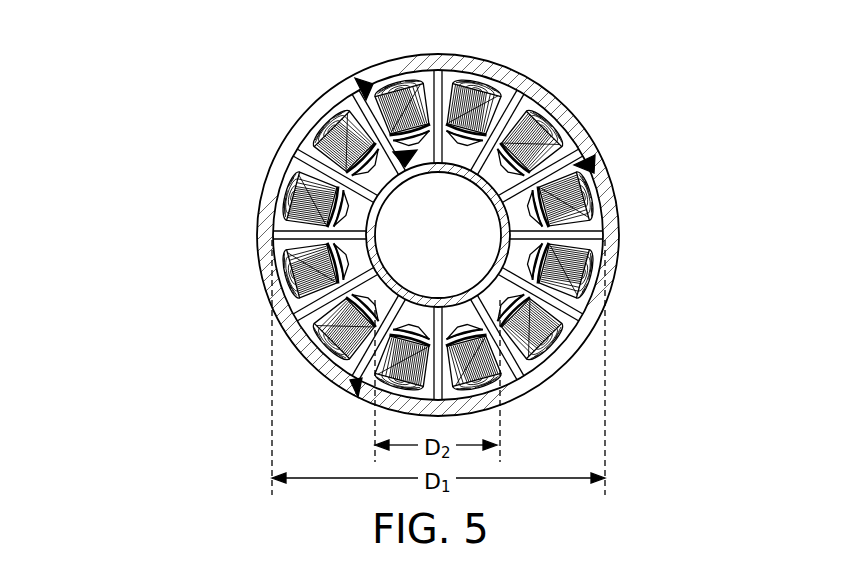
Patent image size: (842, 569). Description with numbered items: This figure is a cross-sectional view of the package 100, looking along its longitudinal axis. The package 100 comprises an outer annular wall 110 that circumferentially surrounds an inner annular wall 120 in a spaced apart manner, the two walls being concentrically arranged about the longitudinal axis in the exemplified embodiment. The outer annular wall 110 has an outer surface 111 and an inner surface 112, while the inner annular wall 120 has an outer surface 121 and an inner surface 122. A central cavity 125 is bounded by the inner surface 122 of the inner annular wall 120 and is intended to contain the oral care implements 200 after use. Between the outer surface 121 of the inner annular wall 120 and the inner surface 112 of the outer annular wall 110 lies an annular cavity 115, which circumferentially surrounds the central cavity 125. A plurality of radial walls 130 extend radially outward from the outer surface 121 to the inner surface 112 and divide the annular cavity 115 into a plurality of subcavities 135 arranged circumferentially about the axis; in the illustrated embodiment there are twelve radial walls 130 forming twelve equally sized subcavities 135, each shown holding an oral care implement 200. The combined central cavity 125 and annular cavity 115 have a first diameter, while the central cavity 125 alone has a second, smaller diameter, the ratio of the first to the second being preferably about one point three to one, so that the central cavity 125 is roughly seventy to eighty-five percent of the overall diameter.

The package 100 is at (150, 54).
The outer annular wall 110 is at (582, 134).
The outer surface of the outer annular wall 111 is at (522, 115).
The inner surface of the outer annular wall 112 is at (491, 83).
The annular cavity 115 is at (400, 157).
The inner annular wall 120 is at (585, 305).
The outer surface of the inner annular wall 121 is at (553, 202).
The inner surface of the inner annular wall 122 is at (513, 232).
The central cavity 125 is at (404, 241).
The radial walls 130 is at (563, 320).
The subcavities 135 is at (363, 80).
The oral care implements 200 is at (535, 118).